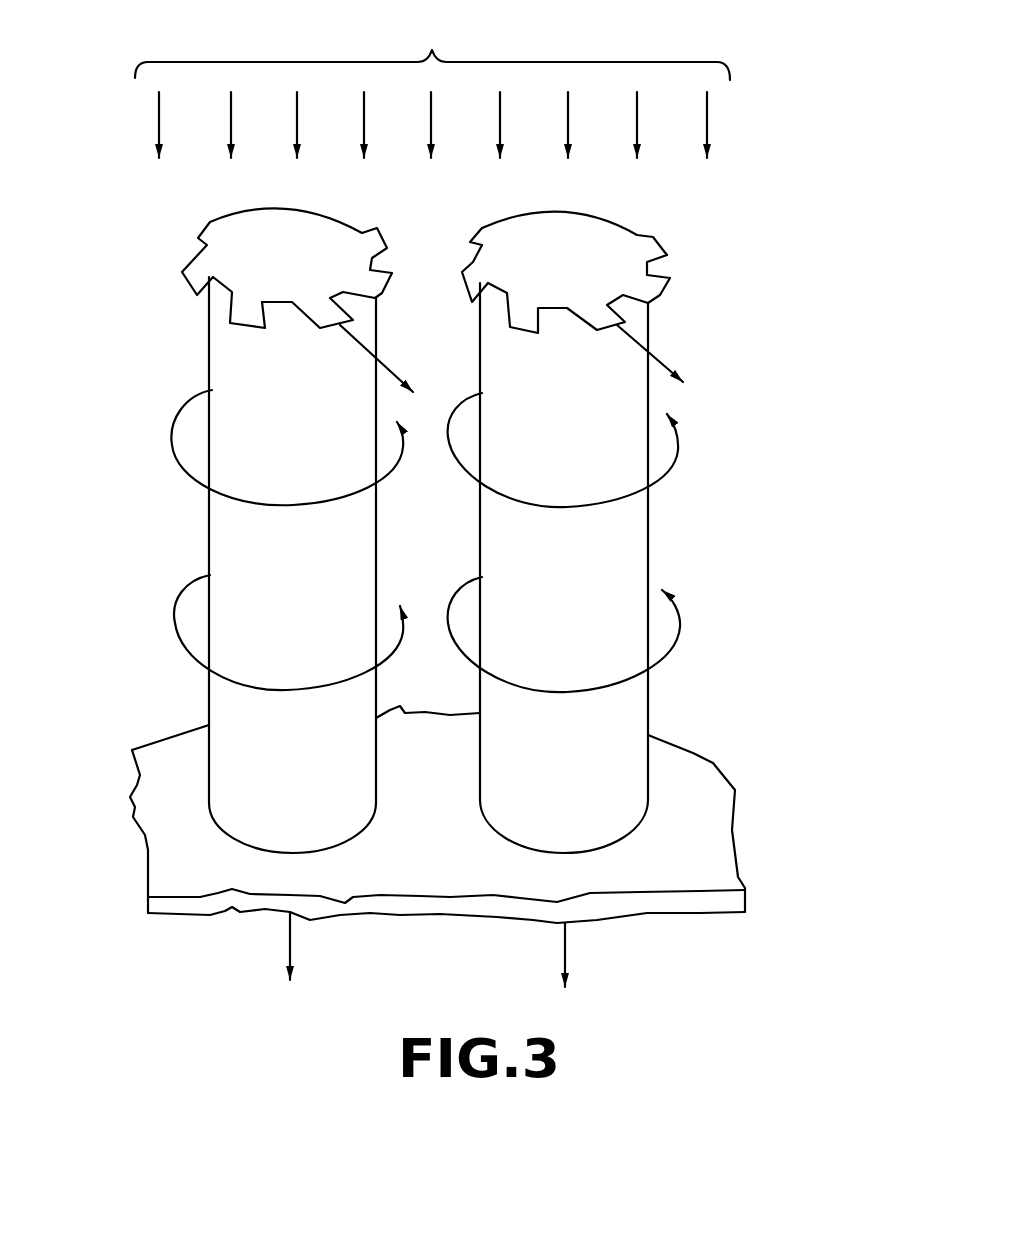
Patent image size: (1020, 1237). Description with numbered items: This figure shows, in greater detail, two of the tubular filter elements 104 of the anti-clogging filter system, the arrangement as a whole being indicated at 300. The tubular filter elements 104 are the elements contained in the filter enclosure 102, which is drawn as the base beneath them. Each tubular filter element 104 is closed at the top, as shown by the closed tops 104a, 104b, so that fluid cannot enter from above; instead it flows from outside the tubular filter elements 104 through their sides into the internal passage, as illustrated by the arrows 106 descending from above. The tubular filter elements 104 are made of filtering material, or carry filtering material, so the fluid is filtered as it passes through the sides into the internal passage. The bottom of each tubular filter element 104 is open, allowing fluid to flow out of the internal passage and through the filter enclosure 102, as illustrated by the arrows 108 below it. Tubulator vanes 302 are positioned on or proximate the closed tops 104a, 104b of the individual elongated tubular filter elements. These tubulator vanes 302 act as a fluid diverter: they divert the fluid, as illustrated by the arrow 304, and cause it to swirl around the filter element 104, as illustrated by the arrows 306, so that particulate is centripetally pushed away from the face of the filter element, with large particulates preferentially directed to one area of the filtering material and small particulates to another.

The system for surface modification 300 is at (672, 33).
The arrows 106 is at (432, 79).
The closed top 104a is at (326, 272).
The second gear-shaped tip 104b is at (596, 278).
The tubulator vanes 302 is at (248, 328).
The arrow 304 is at (390, 370).
The arrows 306 is at (197, 480).
The tubular filter elements 104 is at (317, 776).
The filter enclosure 102 is at (700, 875).
The arrows 108 is at (290, 940).